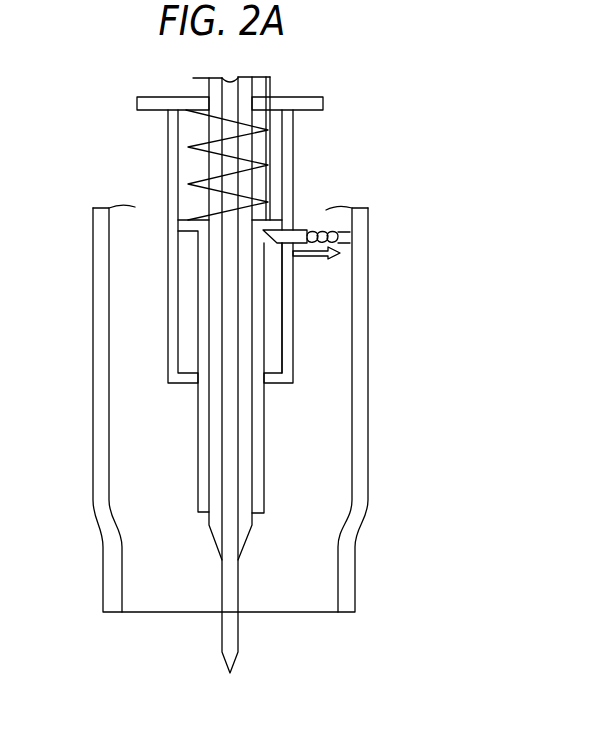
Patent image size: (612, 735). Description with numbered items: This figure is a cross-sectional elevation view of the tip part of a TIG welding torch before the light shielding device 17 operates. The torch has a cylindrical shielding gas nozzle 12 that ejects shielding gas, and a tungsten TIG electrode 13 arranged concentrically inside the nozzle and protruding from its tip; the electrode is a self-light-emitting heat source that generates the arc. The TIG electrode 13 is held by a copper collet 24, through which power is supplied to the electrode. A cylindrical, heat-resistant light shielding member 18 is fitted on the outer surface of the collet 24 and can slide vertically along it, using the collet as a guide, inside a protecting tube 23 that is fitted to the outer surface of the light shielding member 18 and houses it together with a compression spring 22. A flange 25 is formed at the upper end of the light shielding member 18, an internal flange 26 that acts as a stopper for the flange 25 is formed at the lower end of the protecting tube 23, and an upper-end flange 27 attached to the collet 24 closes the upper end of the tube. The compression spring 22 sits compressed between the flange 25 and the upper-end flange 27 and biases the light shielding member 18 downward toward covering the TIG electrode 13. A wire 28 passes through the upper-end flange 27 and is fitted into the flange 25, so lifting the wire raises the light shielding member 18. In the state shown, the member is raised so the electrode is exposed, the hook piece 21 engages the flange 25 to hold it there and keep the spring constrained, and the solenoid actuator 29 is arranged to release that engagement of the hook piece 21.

The shielding gas nozzle 12 is at (368, 465).
The TIG electrode 13 is at (238, 637).
The light shielding device 17 is at (326, 163).
The light shielding member 18 is at (262, 467).
The hook piece 21 is at (300, 229).
The compression spring 22 is at (258, 160).
The protecting tube 23 is at (293, 298).
The collet 24 is at (208, 528).
The flange 25 is at (175, 227).
The internal flange 26 is at (178, 385).
The upper-end flange 27 is at (157, 112).
The wire 28 is at (272, 81).
The actuator 29 is at (332, 230).